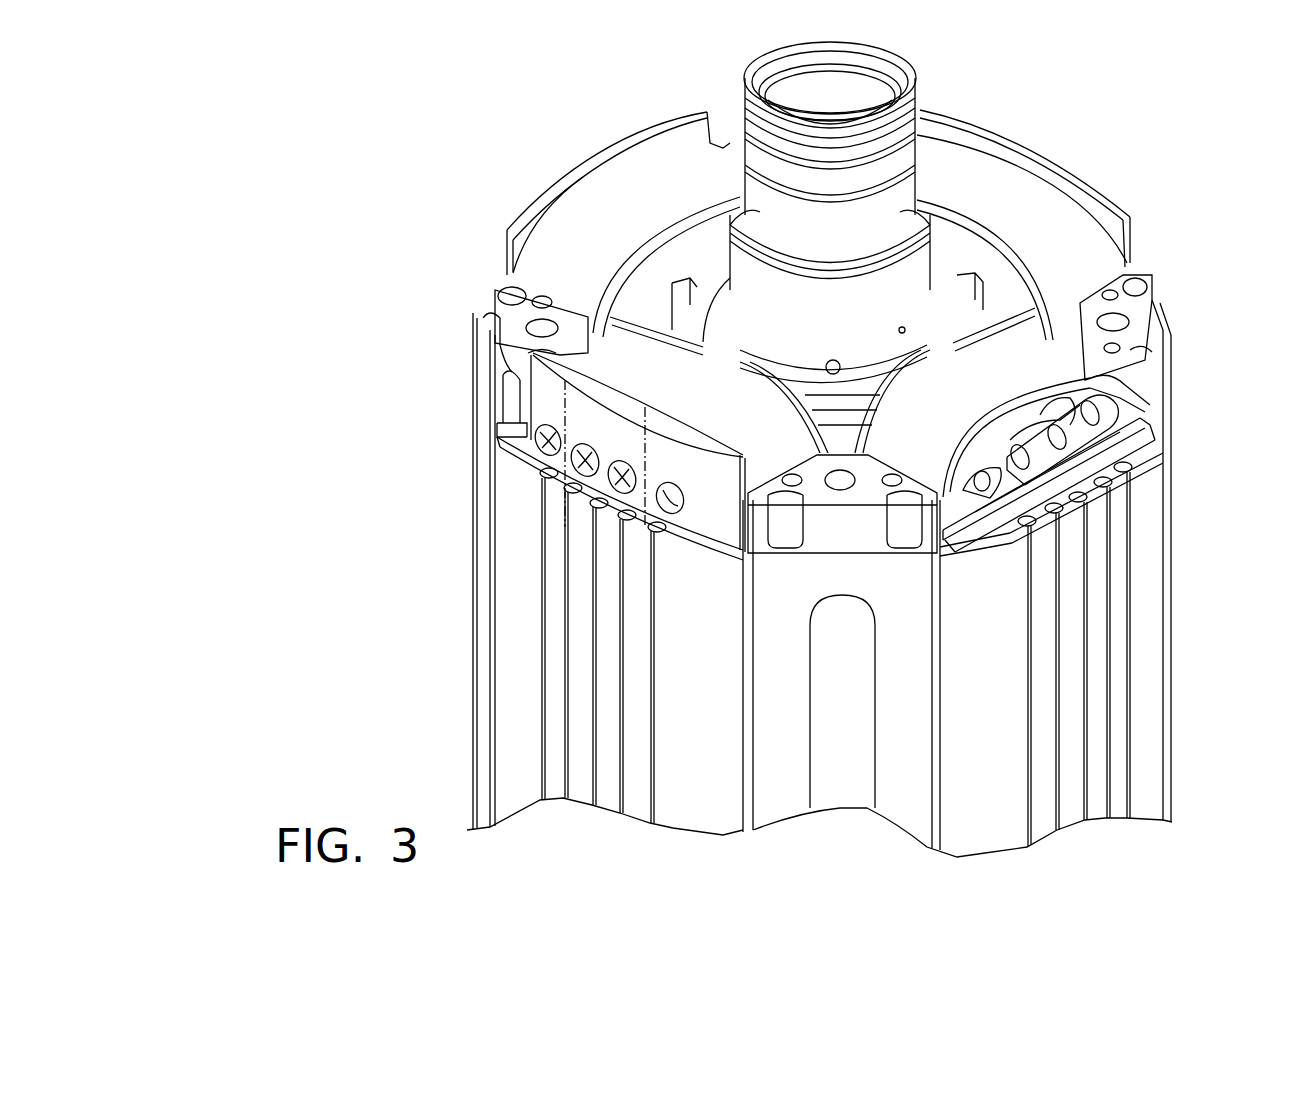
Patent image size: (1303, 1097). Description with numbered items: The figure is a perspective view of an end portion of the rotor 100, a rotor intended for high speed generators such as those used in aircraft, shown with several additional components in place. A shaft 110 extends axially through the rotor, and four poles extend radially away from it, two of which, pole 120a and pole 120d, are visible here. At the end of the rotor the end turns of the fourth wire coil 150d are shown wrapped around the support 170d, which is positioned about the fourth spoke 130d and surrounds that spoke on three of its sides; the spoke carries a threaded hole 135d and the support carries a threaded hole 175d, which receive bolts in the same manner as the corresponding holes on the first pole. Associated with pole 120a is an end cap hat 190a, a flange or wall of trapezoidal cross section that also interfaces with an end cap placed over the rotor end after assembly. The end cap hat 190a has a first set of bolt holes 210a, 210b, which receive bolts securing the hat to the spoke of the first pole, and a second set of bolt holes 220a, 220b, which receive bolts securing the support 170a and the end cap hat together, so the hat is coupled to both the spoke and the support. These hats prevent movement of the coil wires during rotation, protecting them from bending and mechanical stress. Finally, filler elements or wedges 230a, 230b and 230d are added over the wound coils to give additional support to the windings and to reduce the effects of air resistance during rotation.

The rotor 100 is at (562, 128).
The shaft 110 is at (918, 96).
The pole 120a is at (510, 690).
The pole 120d is at (1145, 622).
The spoke 130d is at (1107, 490).
The threaded hole 135d is at (1060, 415).
The wire coil 150d is at (1130, 405).
The support 170a is at (740, 367).
The support 170d is at (1085, 433).
The threaded hole 175d is at (1080, 400).
The end cap hat 190a is at (525, 425).
The bolt hole 210a is at (585, 442).
The bolt hole 210b is at (625, 460).
The bolt hole 220a is at (578, 374).
The bolt hole 220b is at (675, 507).
The wedge 230a is at (900, 790).
The wedge 230b is at (507, 320).
The wedge 230d is at (1145, 325).